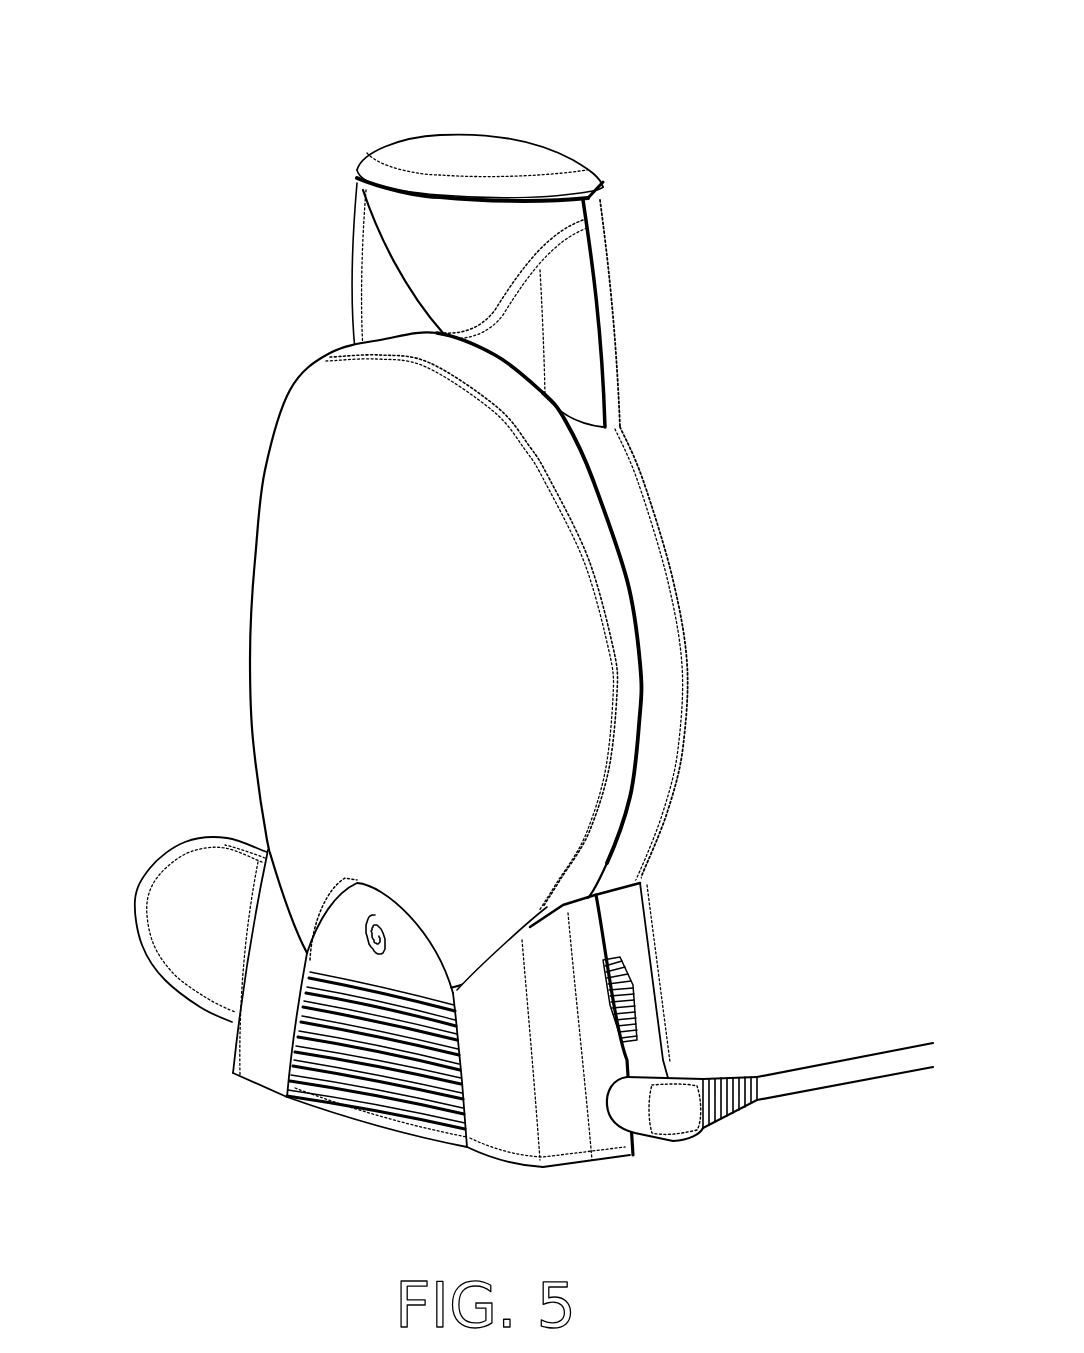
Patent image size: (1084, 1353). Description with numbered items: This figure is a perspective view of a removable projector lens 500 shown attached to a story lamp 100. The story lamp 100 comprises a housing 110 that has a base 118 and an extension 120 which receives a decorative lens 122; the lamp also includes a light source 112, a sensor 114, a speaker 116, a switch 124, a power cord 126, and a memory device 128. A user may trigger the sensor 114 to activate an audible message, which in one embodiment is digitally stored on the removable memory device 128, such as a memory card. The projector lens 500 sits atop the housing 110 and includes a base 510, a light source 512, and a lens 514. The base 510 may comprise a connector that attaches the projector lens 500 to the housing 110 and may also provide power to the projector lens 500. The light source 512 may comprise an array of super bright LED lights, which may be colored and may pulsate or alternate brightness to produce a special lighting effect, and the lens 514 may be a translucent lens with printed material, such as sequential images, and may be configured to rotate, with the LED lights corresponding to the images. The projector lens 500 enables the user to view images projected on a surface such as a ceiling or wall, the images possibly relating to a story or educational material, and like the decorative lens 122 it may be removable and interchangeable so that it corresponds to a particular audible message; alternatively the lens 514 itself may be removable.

The story lamp 100 is at (134, 167).
The housing 110 is at (810, 602).
The light source 112 is at (437, 629).
The sensor 114 is at (379, 936).
The speaker 116 is at (447, 1073).
The base 118 is at (647, 1058).
The extension 120 is at (635, 515).
The decorative lens 122 is at (275, 487).
The switch 124 is at (630, 990).
The power cord 126 is at (877, 1058).
The memory device 128 is at (232, 937).
The projector lens 500 is at (632, 122).
The base 510 is at (578, 290).
The light source 512 is at (488, 86).
The lens 514 is at (428, 150).